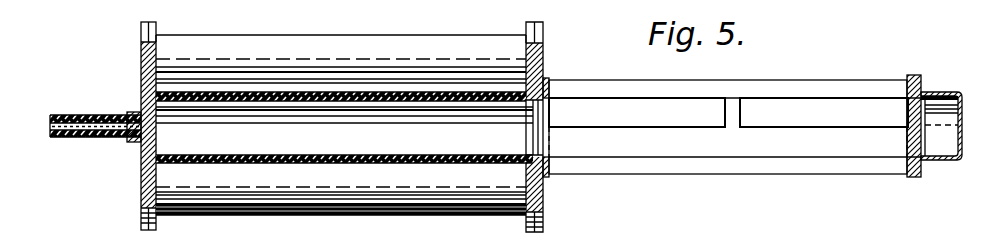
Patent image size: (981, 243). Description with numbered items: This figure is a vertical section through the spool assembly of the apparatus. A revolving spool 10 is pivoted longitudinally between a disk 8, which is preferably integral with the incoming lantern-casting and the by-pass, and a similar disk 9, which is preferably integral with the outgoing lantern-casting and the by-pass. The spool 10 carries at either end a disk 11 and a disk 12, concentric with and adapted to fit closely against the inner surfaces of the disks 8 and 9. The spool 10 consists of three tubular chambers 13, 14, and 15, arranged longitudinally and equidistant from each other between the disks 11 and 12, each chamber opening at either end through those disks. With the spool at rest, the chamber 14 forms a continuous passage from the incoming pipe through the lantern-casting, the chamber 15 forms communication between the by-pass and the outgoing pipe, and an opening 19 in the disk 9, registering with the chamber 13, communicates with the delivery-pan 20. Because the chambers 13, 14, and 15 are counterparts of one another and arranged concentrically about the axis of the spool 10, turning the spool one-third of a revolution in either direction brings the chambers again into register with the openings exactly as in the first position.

The disk 8 is at (141, 68).
The disk 9 is at (543, 52).
The revolving spool 10 is at (341, 111).
The disk 11 is at (158, 40).
The disk 12 is at (527, 43).
The tubular chamber 13 is at (291, 135).
The tubular chamber 14 is at (341, 70).
The tubular chamber 15 is at (341, 190).
The opening 19 is at (533, 137).
The delivery-pan 20 is at (705, 168).